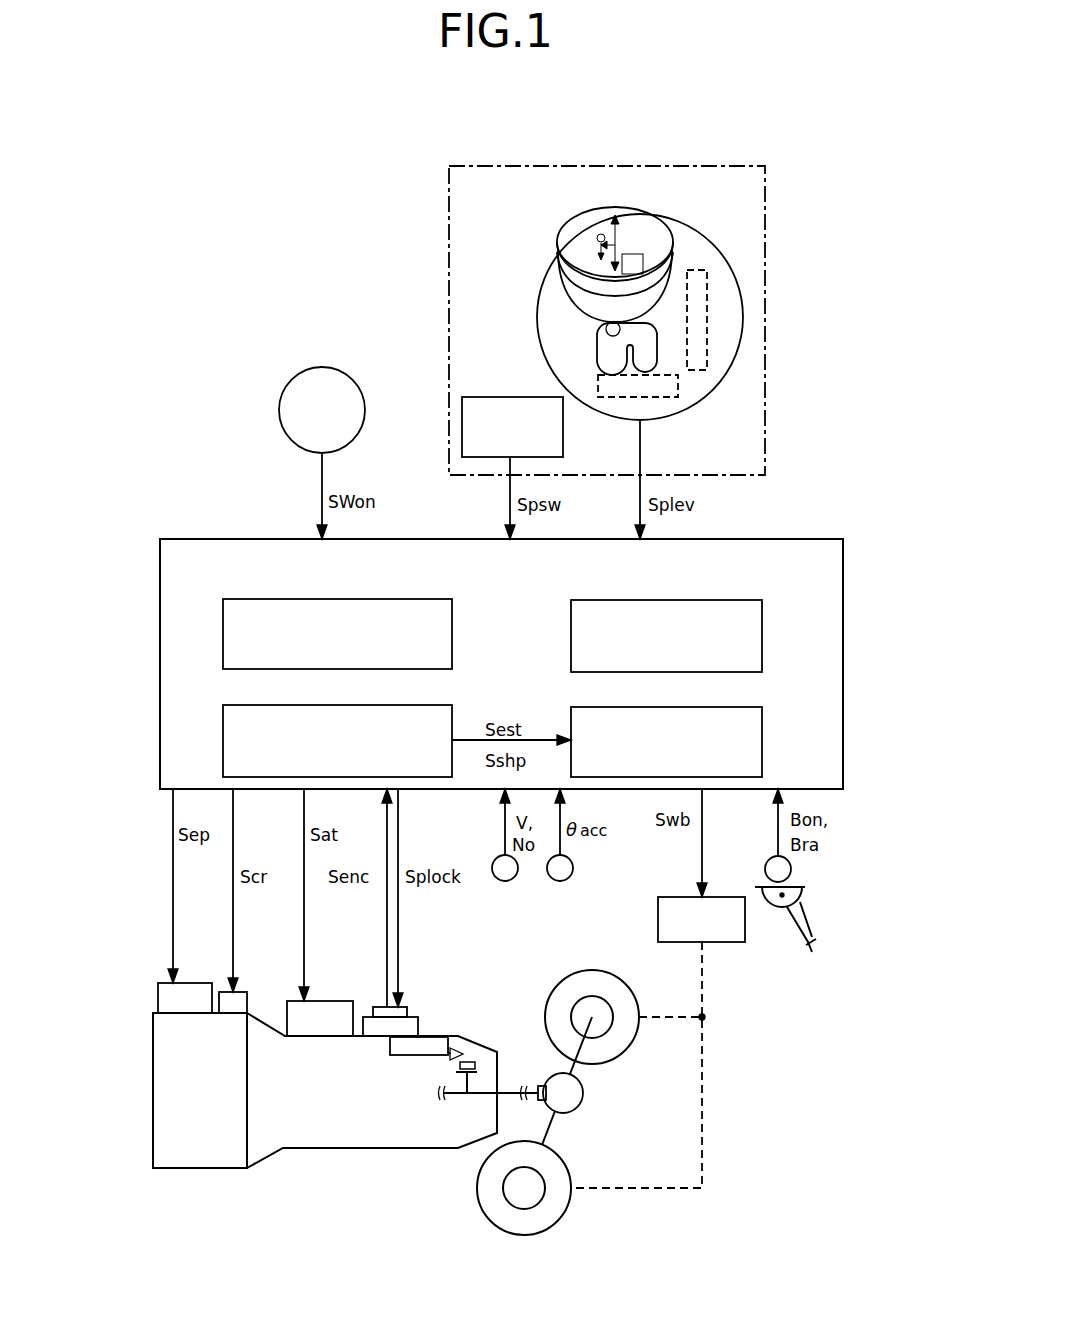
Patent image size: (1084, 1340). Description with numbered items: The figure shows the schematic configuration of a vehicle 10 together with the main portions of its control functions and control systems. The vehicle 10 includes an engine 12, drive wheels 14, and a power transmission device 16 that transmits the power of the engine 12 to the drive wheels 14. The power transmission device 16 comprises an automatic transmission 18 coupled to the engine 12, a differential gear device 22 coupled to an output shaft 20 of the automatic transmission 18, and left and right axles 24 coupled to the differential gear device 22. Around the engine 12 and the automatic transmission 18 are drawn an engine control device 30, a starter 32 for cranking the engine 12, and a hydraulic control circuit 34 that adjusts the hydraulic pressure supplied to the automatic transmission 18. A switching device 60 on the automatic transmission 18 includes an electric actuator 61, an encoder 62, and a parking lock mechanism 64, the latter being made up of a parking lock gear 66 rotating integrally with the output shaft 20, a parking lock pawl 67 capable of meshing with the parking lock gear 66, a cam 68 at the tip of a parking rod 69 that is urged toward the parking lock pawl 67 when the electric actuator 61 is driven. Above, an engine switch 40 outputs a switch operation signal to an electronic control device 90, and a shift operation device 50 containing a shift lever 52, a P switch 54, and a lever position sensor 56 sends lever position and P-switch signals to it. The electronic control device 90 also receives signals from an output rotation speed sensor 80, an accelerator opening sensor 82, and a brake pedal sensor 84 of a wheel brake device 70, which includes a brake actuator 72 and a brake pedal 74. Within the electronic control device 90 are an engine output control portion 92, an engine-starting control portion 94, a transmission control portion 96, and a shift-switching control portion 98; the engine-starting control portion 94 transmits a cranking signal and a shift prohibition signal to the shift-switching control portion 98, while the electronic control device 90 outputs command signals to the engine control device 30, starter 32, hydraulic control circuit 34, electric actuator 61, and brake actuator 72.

The vehicle 10 is at (752, 126).
The engine 12 is at (185, 1158).
The drive wheels 14 is at (610, 990).
The power transmission device 16 is at (300, 1206).
The automatic transmission 18 is at (313, 1135).
The output shaft 20 is at (473, 1097).
The differential gear device 22 is at (583, 1098).
The axles 24 is at (578, 1068).
The engine control device 30 is at (197, 990).
The starter 32 is at (237, 997).
The hydraulic control circuit 34 is at (320, 1010).
The engine switch 40 is at (346, 388).
The shift operation device 50 is at (582, 165).
The shift lever 52 is at (602, 213).
The P switch 54 is at (476, 403).
The lever position sensor 56 is at (688, 398).
The switching device 60 is at (362, 988).
The electric actuator 61 is at (410, 1022).
The encoder 62 is at (405, 1008).
The parking lock mechanism 64 is at (486, 1047).
The parking lock gear 66 is at (456, 1072).
The parking lock pawl 67 is at (477, 1058).
The cam 68 is at (458, 1060).
The parking rod 69 is at (407, 1057).
The wheel brake device 70 is at (669, 888).
The brake actuator 72 is at (717, 905).
The brake pedal 74 is at (806, 942).
The output rotation speed sensor 80 is at (507, 881).
The accelerator opening sensor 82 is at (562, 881).
The brake pedal sensor 84 is at (768, 861).
The electronic control device 90 is at (780, 549).
The engine output control portion 92 is at (402, 611).
The engine-starting control portion 94 is at (400, 717).
The transmission control portion 96 is at (716, 613).
The shift-switching control portion 98 is at (716, 719).